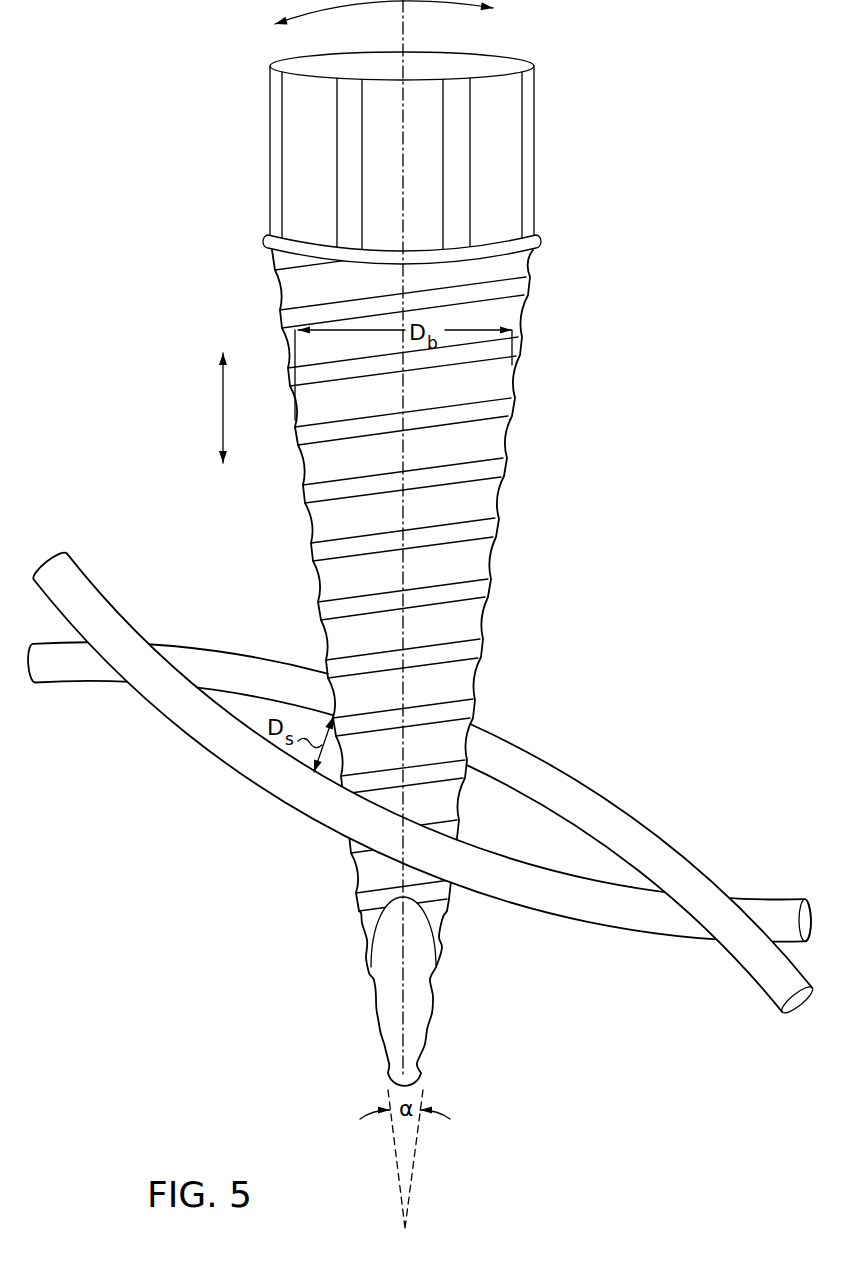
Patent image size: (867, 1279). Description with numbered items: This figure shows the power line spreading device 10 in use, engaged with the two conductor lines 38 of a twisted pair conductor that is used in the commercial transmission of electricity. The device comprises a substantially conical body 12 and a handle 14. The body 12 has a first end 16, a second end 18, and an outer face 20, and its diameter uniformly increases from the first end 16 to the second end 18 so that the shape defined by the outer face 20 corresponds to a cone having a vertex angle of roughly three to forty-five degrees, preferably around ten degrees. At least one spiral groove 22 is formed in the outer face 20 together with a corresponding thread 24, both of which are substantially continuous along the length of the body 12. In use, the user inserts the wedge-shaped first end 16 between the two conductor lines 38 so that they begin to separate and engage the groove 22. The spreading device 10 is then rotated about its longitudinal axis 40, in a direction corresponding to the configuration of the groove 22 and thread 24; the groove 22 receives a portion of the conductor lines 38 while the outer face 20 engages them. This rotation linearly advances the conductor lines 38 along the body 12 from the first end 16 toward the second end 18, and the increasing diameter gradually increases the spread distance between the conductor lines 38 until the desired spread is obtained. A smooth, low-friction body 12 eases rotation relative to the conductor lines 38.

The power line spreading device 10 is at (436, 569).
The body 12 is at (499, 590).
The handle 14 is at (535, 152).
The first end 16 is at (413, 1050).
The second end 18 is at (265, 243).
The outer face 20 is at (458, 122).
The spiral groove 22 is at (357, 876).
The thread 24 is at (466, 776).
The conductor lines 38 is at (672, 851).
The longitudinal axis 40 is at (403, 44).